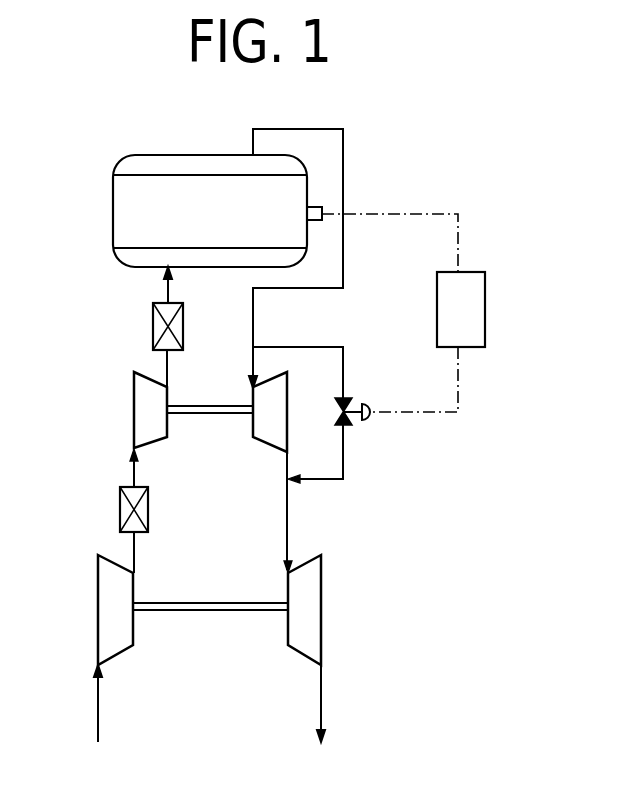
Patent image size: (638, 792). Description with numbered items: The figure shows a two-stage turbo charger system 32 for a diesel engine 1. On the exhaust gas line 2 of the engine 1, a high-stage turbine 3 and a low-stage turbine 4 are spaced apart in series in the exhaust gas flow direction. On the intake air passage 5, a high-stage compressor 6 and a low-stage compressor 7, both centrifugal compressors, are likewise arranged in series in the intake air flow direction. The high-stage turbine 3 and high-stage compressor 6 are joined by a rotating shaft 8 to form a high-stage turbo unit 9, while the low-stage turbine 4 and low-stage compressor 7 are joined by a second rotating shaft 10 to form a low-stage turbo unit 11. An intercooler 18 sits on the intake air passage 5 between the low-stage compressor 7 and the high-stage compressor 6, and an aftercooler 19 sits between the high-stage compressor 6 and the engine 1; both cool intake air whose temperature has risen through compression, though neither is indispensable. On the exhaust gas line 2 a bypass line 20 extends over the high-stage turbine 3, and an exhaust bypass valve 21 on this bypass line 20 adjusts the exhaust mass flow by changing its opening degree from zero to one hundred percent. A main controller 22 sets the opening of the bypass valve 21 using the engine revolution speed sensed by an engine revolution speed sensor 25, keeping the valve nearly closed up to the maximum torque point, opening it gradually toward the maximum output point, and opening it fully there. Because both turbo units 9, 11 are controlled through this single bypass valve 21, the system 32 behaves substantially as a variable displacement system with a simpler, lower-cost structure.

The diesel engine 1 is at (194, 226).
The exhaust gas line 2 is at (290, 518).
The high-stage turbine 3 is at (263, 420).
The low-stage turbine 4 is at (299, 622).
The intake air passage 5 is at (130, 470).
The high-stage compressor 6 is at (143, 420).
The low-stage compressor 7 is at (108, 622).
The rotating shaft 8 is at (203, 416).
The high-stage turbo unit 9 is at (201, 392).
The second rotating shaft 10 is at (190, 614).
The low-stage turbo unit 11 is at (196, 594).
The intercooler 18 is at (120, 518).
The aftercooler 19 is at (153, 318).
The bypass line 20 is at (345, 460).
The exhaust bypass valve 21 is at (346, 400).
The main controller 22 is at (449, 318).
The engine revolution speed sensor 25 is at (318, 207).
The two-stage turbo charger system 32 is at (446, 165).